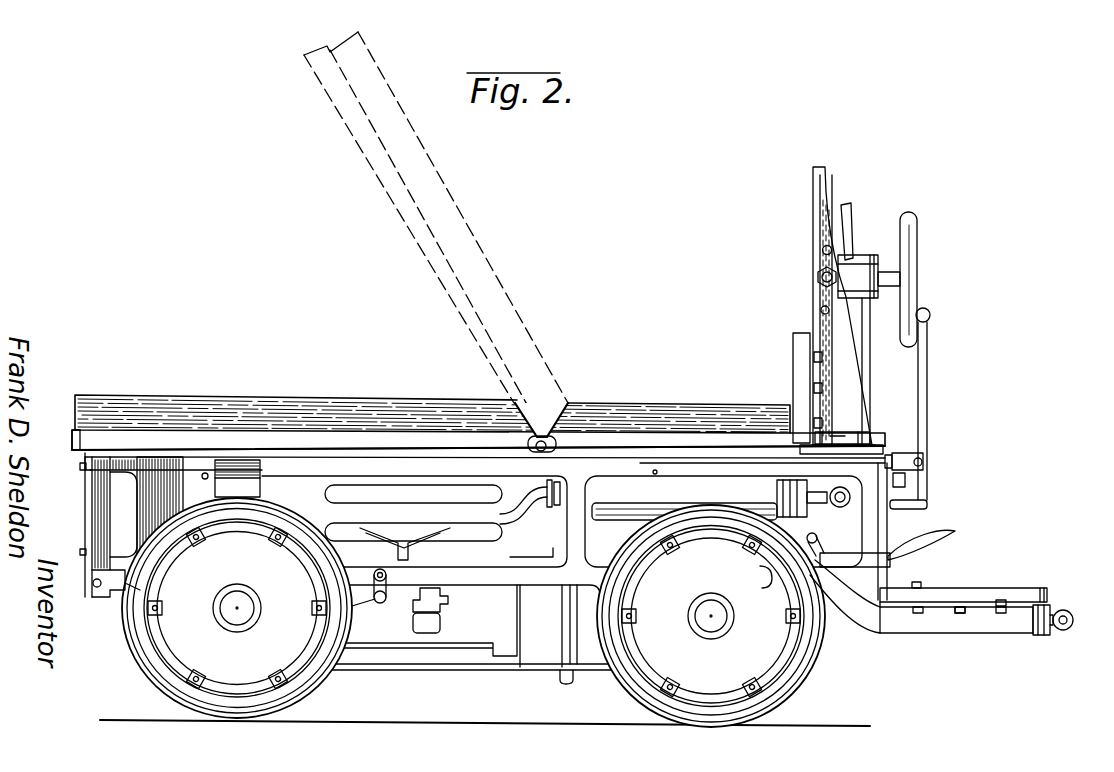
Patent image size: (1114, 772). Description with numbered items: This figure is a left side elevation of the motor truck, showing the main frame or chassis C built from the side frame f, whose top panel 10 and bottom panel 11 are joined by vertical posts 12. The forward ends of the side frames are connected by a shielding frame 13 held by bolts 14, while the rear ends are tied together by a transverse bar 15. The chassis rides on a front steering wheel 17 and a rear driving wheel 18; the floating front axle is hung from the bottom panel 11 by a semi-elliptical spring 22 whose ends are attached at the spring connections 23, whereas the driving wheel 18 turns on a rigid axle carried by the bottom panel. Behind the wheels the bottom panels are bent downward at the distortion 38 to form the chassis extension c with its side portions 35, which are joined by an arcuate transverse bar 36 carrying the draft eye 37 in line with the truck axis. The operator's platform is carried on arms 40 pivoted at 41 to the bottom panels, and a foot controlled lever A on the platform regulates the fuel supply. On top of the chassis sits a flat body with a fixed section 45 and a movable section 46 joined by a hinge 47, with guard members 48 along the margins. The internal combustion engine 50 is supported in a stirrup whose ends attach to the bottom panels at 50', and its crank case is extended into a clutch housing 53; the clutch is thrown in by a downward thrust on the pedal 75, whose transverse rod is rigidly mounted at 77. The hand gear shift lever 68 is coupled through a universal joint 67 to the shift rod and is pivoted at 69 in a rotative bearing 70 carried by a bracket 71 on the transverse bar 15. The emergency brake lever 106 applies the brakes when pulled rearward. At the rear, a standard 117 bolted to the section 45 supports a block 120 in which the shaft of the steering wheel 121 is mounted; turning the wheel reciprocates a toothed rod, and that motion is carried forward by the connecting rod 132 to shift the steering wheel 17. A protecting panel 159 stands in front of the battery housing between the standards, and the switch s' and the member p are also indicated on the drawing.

The top panel 10 is at (706, 469).
The bottom panel 11 is at (499, 577).
The vertical post 12 is at (100, 511).
The shielding frame 13 is at (88, 592).
The bolt 14 is at (87, 472).
The transverse bar 15 is at (908, 488).
The steering wheel 17 is at (237, 608).
The driving wheel 18 is at (711, 616).
The semi-elliptical spring 22 is at (369, 602).
The spring connection 23 is at (388, 574).
The side portion 35 is at (970, 628).
The arcuate transverse bar 36 is at (1043, 634).
The draft eye 37 is at (1074, 621).
The downward distortion 38 is at (833, 613).
The arm 40 is at (897, 605).
The pivot 41 is at (758, 572).
The body section 45 is at (693, 447).
The movable section 46 is at (302, 436).
The hinge 47 is at (570, 407).
The guard member 48 is at (566, 401).
The internal combustion engine 50 is at (442, 520).
The stirrup frame connection 50' is at (448, 611).
The clutch housing 53 is at (475, 627).
The universal joint 67 is at (928, 503).
The hand gear shift lever 68 is at (928, 371).
The lever pivot 69 is at (924, 463).
The rotative bearing 70 is at (923, 453).
The bracket 71 is at (895, 480).
The pedal 75 is at (950, 537).
The rod mounting 77 is at (817, 567).
The emergency brake lever 106 is at (852, 220).
The standard 117 is at (820, 295).
The block 120 is at (826, 267).
The steering wheel 121 is at (908, 273).
The connecting rod 132 is at (510, 668).
The protecting panel 159 is at (802, 366).
The foot controlled lever A is at (920, 588).
The main frame C is at (78, 464).
The chassis extension c is at (937, 620).
The side frame f is at (655, 470).
The bolt p is at (1002, 593).
The spring s' is at (858, 436).